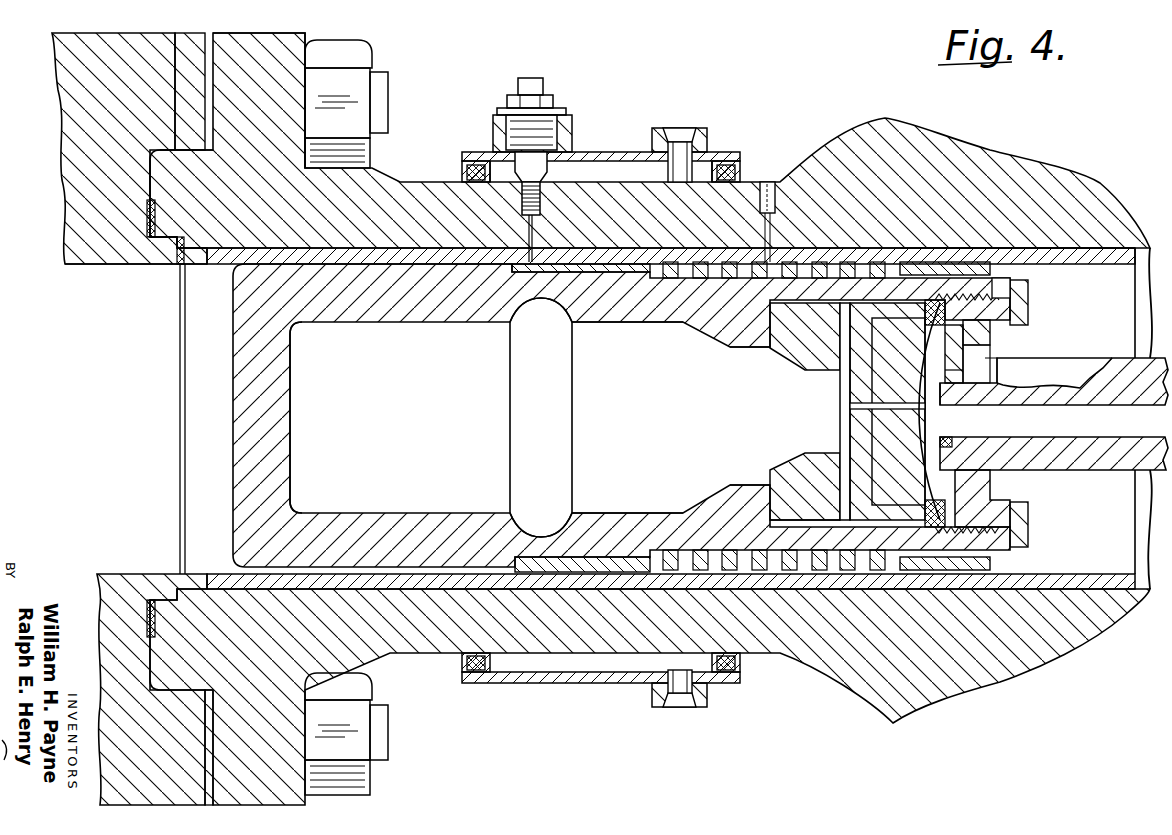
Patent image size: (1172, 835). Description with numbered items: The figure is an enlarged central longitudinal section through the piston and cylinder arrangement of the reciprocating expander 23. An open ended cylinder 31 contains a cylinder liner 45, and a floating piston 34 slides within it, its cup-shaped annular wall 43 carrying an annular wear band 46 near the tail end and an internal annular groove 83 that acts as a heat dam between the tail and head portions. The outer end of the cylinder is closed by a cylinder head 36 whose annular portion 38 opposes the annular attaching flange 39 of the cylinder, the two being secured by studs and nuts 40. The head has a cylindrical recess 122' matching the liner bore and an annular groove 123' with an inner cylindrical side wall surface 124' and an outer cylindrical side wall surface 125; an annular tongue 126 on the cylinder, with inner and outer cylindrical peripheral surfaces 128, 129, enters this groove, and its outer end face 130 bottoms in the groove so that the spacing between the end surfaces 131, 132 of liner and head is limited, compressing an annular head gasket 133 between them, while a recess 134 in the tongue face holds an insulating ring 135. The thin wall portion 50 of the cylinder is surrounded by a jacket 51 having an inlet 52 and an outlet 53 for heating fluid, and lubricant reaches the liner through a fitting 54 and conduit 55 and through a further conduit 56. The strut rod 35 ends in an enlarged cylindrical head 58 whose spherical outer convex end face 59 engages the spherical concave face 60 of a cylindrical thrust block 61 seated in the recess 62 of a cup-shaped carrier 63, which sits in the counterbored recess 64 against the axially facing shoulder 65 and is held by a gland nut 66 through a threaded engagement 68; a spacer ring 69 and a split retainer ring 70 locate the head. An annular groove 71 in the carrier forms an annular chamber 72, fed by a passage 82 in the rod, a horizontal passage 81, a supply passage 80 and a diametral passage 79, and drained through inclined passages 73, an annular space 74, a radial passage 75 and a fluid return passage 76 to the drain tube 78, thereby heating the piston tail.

The reciprocating expander 23 is at (600, 48).
The cylinder 31 is at (856, 148).
The piston 34 is at (232, 402).
The strut rod 35 is at (1055, 362).
The cylinder head 36 is at (52, 62).
The annular portion 38 is at (92, 22).
The annular attaching flange 39 is at (268, 22).
The studs and nuts 40 is at (355, 46).
The annular wall 43 is at (633, 312).
The cylinder liner 45 is at (220, 262).
The annular wear band 46 is at (942, 262).
The thin wall portion 50 is at (598, 184).
The jacket 51 is at (625, 152).
The inlet 52 is at (690, 128).
The outlet 53 is at (700, 700).
The fitting 54 is at (504, 115).
The conduit 55 is at (538, 228).
The conduit 56 is at (766, 250).
The enlarged cylindrical head 58 is at (954, 374).
The spherical outer convex end face 59 is at (933, 383).
The spherical concave face 60 is at (916, 410).
The cylindrical thrust block 61 is at (898, 411).
The recess 62 is at (873, 338).
The cup-shaped carrier 63 is at (790, 482).
The counterbored recess 64 is at (831, 519).
The axially facing shoulder 65 is at (759, 328).
The gland nut 66 is at (1029, 299).
The threaded engagement 68 is at (1003, 282).
The spacer ring 69 is at (948, 528).
The split retainer ring 70 is at (990, 335).
The annular groove 71 is at (812, 304).
The annular chamber 72 is at (898, 299).
The inclined passages 73 is at (946, 300).
The annular space 74 is at (286, 391).
The radial passage 75 is at (950, 462).
The fluid return passage 76 is at (1070, 443).
The drain tube 78 is at (590, 556).
The diametral passage 79 is at (845, 262).
The supply passage 80 is at (850, 413).
The horizontal passage 81 is at (902, 418).
The passage 82 is at (1058, 409).
The annular groove 83 is at (531, 300).
The cylindrical recess 122' is at (155, 672).
The annular groove 123' is at (84, 190).
The inner cylindrical side wall surface 124' is at (160, 264).
The outer cylindrical side wall surface 125 is at (178, 140).
The annular tongue 126 is at (152, 173).
The inner cylindrical peripheral surface 128 is at (162, 240).
The outer cylindrical peripheral surface 129 is at (184, 152).
The outer end face 130 is at (150, 205).
The end surface 131 is at (186, 266).
The end surface 132 is at (180, 262).
The annular head gasket 133 is at (183, 573).
The recess 134 is at (132, 258).
The insulating ring 135 is at (150, 232).